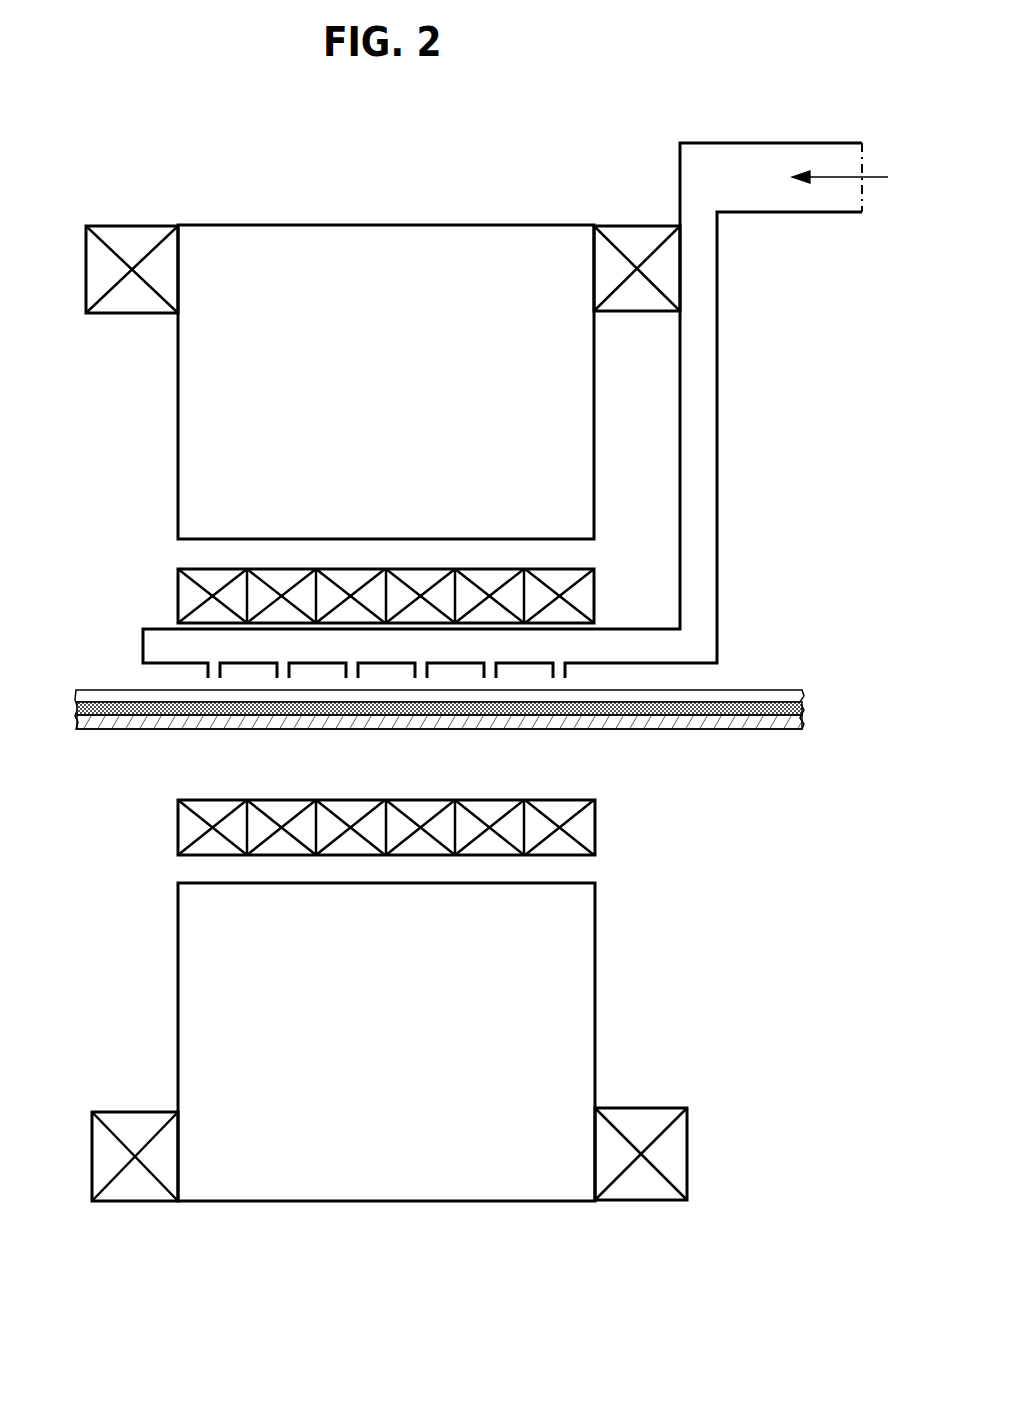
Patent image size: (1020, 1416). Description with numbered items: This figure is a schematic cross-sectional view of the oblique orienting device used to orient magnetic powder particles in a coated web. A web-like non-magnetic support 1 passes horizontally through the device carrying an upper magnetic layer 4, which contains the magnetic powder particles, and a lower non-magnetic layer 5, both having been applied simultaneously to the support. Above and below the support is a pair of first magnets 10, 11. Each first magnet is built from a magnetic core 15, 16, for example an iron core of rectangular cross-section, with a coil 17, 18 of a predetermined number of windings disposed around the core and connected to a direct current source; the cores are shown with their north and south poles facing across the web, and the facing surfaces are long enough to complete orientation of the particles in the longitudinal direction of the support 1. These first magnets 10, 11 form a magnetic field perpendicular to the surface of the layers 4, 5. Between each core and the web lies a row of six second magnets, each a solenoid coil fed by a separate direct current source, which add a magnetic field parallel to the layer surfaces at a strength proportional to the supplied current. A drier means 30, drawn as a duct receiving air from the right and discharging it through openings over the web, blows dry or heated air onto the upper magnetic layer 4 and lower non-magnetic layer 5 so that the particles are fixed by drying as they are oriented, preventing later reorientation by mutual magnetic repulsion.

The non-magnetic support 1 is at (740, 695).
The upper magnetic layer 4 is at (755, 722).
The lower non-magnetic layer 5 is at (788, 708).
The first magnet 10 is at (493, 200).
The first magnet 11 is at (609, 977).
The magnetic core 15 is at (298, 250).
The magnetic core 16 is at (575, 1040).
The coil 17 is at (131, 245).
The coil 18 is at (138, 1118).
The drier means 30 is at (719, 384).